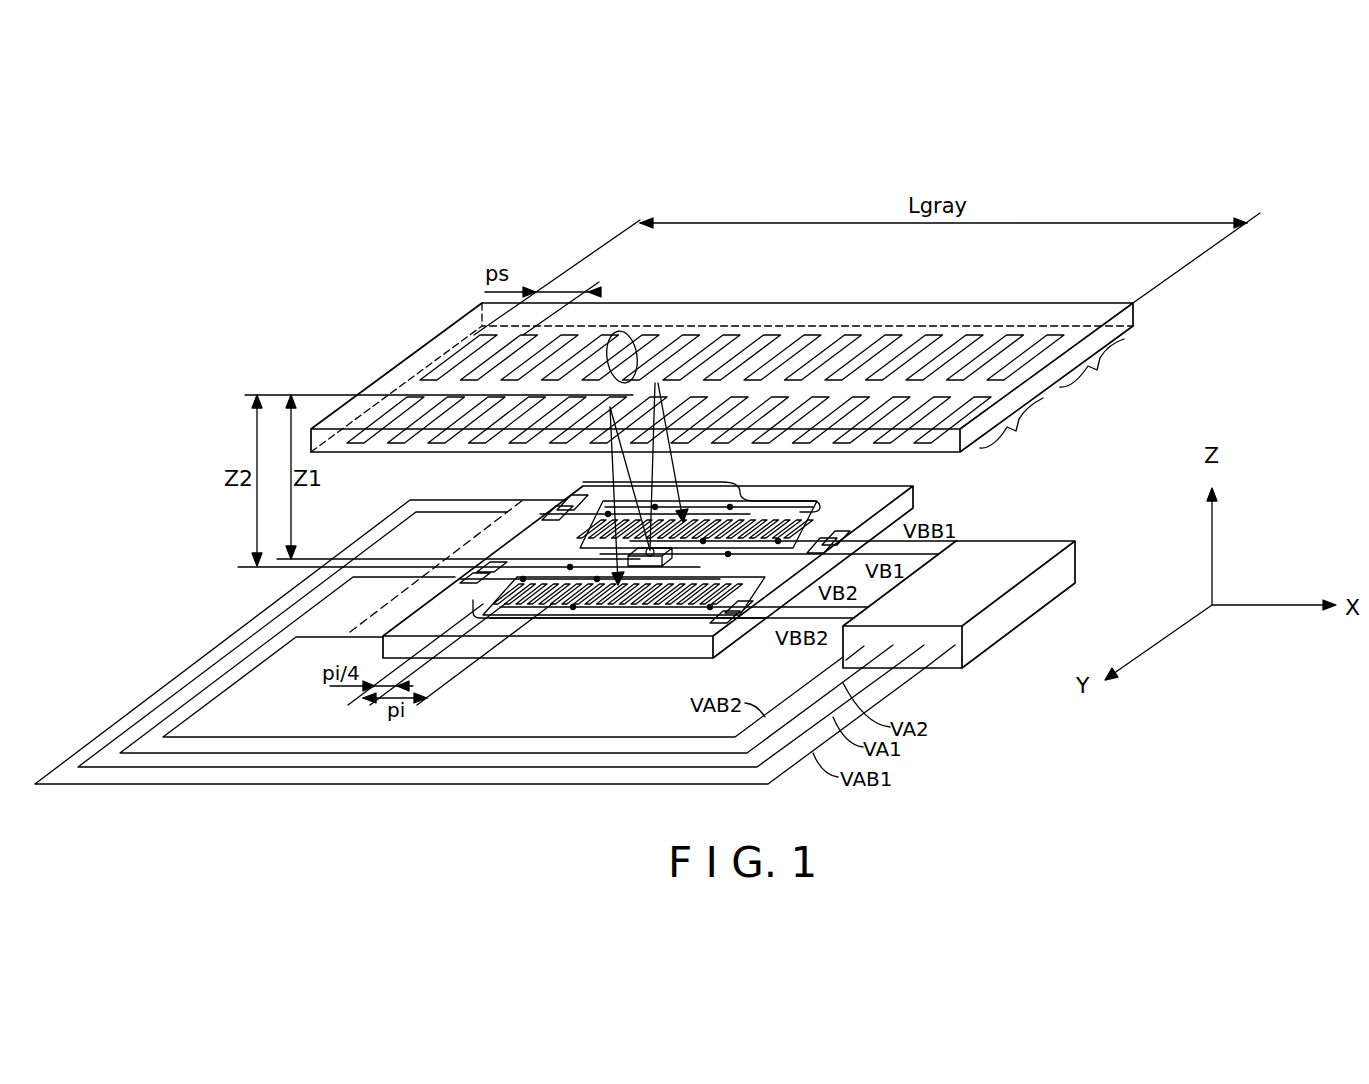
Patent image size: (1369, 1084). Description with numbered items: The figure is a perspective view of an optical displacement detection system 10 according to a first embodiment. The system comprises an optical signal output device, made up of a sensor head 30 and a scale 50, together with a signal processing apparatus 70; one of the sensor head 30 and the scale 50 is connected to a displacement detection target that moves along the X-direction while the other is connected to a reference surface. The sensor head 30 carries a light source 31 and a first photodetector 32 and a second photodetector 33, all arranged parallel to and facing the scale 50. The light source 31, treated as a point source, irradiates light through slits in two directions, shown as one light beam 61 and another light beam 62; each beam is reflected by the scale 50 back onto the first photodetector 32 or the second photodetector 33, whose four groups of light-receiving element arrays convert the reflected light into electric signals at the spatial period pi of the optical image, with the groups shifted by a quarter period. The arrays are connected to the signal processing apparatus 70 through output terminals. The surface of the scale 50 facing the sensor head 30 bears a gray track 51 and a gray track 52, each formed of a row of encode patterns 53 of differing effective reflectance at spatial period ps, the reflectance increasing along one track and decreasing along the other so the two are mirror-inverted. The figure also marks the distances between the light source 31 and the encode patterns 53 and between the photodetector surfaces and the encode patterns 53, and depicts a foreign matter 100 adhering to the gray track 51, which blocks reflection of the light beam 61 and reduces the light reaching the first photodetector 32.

The optical displacement detection system 10 is at (1280, 193).
The sensor head 30 is at (650, 660).
The light source 31 is at (672, 553).
The first photodetector 32 is at (720, 484).
The second photodetector 33 is at (578, 618).
The scale 50 is at (408, 356).
The gray track 51 is at (1098, 363).
The gray track 52 is at (1018, 423).
The encode pattern 53 is at (457, 347).
The light beam 61 is at (673, 465).
The light beam 62 is at (607, 463).
The signal processing apparatus 70 is at (1003, 540).
The foreign matter 100 is at (630, 332).